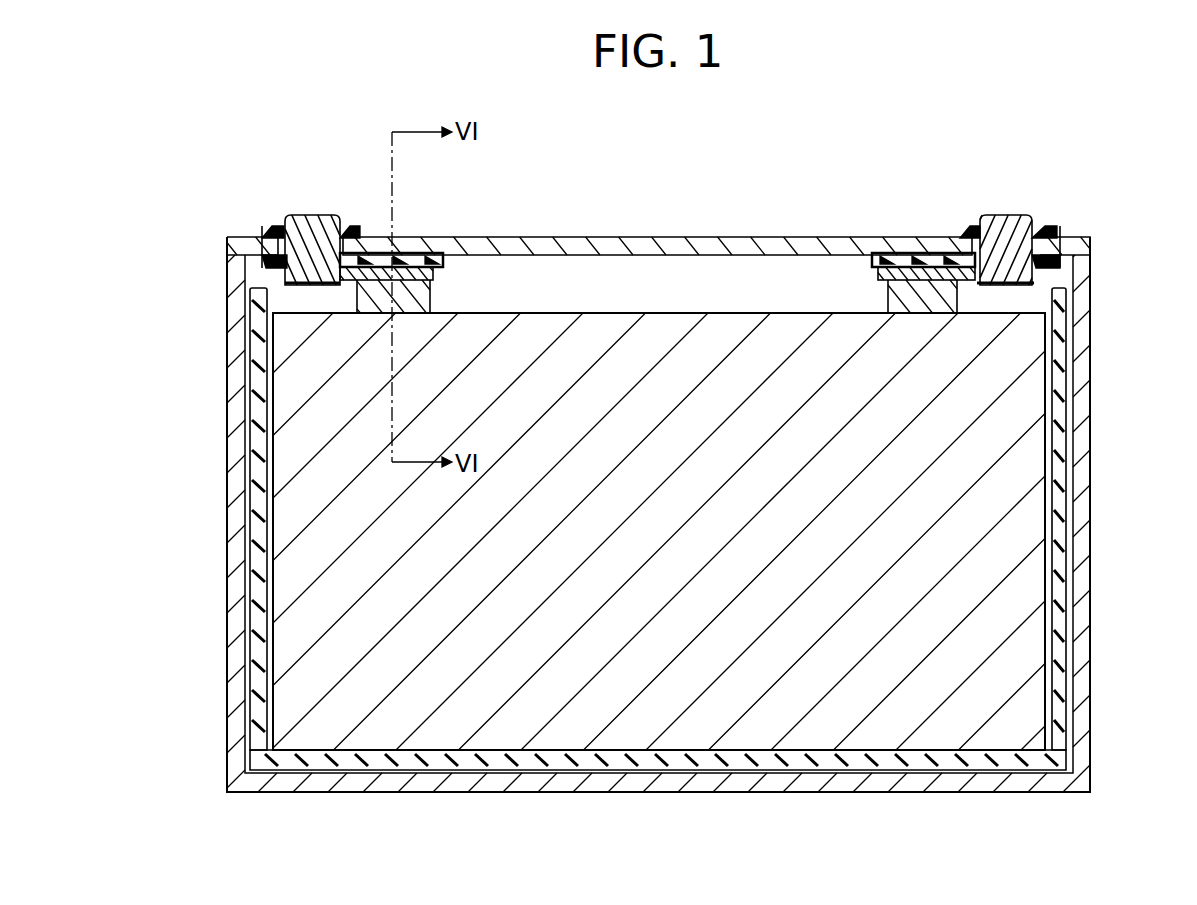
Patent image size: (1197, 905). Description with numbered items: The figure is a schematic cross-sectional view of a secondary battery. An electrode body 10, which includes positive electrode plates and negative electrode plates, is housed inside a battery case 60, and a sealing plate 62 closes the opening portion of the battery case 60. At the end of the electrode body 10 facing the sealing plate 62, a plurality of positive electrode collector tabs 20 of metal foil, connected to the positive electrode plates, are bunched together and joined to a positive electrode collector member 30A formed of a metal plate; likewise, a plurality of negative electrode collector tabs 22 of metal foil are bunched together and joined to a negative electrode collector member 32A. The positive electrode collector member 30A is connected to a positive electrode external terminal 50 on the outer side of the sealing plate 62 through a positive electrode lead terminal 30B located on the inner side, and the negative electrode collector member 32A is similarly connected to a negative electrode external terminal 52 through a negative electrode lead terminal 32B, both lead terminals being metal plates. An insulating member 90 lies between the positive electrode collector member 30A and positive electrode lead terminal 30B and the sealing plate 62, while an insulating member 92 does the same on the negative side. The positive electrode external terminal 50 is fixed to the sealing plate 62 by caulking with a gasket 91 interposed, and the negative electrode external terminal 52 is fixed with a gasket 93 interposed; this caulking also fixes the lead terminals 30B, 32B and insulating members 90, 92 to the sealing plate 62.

The electrode body 10 is at (645, 724).
The positive electrode collector tabs 20 is at (430, 295).
The negative electrode collector tabs 22 is at (888, 300).
The positive electrode collector member 30A is at (413, 266).
The positive electrode lead terminal 30B is at (247, 286).
The negative electrode collector member 32A is at (912, 260).
The negative electrode lead terminal 32B is at (1068, 286).
The positive electrode external terminal 50 is at (306, 213).
The negative electrode external terminal 52 is at (1007, 213).
The battery case 60 is at (237, 430).
The sealing plate 62 is at (680, 246).
The insulating member 90 is at (373, 257).
The gasket 91 is at (272, 235).
The insulating member 92 is at (952, 257).
The gasket 93 is at (1047, 232).